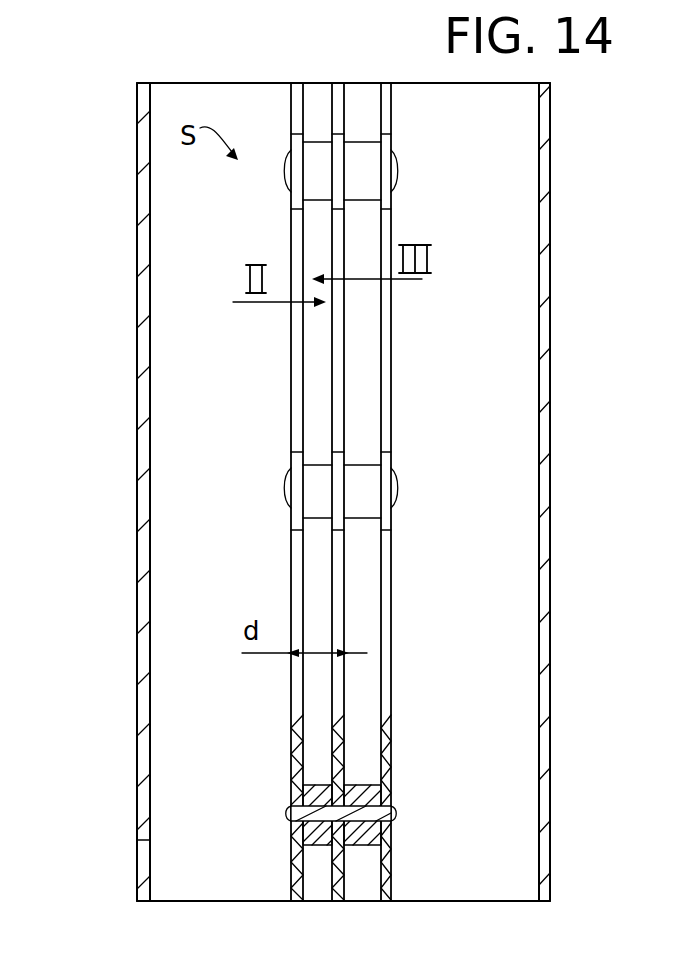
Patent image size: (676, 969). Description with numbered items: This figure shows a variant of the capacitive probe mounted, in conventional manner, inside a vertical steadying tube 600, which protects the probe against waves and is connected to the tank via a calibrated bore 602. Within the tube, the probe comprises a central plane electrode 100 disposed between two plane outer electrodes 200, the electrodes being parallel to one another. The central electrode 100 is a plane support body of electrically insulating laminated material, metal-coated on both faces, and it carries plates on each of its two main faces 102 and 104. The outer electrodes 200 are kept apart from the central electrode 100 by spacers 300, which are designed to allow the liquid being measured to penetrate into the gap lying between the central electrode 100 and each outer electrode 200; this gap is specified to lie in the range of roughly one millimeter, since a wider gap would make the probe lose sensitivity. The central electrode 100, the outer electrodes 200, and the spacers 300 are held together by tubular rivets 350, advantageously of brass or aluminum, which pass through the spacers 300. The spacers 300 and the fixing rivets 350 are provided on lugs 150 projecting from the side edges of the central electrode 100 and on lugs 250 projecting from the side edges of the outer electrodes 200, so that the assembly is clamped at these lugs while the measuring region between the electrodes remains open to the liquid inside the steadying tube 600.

The central plane electrode 100 is at (326, 240).
The main face of central electrode 102 is at (313, 596).
The main face of central electrode 104 is at (353, 590).
The lug of central electrode 150 is at (340, 136).
The plane outer electrode 200 is at (284, 338).
The lug of outer electrode 250 is at (294, 137).
The spacer 300 is at (318, 202).
The tubular rivet 350 is at (398, 812).
The vertical steadying tube 600 is at (545, 277).
The calibrated bore 602 is at (128, 865).